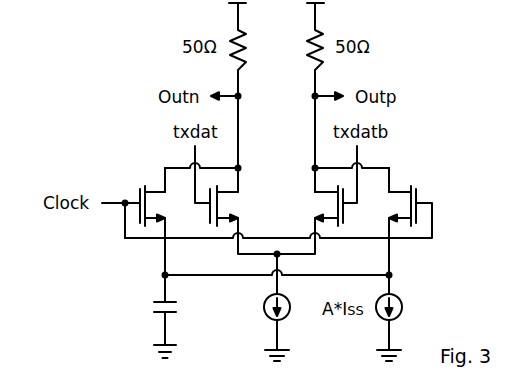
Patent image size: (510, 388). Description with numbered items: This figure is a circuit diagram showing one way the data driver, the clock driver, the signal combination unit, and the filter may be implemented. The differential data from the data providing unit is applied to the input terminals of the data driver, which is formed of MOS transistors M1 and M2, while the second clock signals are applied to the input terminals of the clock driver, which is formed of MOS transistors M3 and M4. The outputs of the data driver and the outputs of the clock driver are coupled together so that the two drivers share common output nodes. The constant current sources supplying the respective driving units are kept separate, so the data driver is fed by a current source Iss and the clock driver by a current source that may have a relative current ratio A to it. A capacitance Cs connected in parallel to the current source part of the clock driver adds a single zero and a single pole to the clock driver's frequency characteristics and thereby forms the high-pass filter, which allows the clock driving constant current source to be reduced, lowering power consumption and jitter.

The MOS transistor M1 is at (237, 206).
The MOS transistor M2 is at (316, 206).
The MOS transistor M3 is at (166, 206).
The MOS transistor M4 is at (391, 206).
The capacitance Cs is at (148, 328).
The current source Iss is at (259, 327).